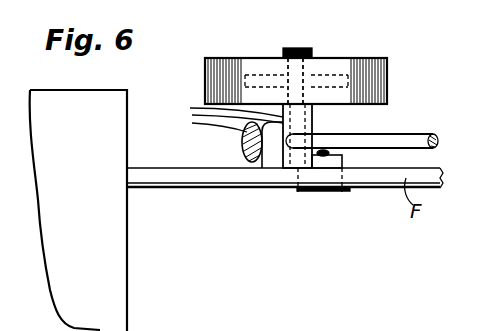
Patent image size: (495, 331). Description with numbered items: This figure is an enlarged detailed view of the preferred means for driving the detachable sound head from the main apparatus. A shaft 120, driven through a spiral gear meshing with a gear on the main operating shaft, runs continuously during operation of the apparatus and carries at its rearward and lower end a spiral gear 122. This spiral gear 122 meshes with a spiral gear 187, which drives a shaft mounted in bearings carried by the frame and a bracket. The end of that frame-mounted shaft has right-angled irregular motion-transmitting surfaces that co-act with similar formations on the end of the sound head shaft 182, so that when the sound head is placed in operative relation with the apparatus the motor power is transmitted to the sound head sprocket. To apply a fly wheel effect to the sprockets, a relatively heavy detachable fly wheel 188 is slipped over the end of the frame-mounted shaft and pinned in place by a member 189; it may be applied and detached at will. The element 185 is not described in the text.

The shaft 120 is at (405, 136).
The spiral gear 122 is at (243, 147).
The shaft 182 is at (298, 47).
The block 185 is at (343, 163).
The spiral gear 187 is at (318, 128).
The fly wheel 188 is at (389, 67).
The member 189 is at (306, 48).